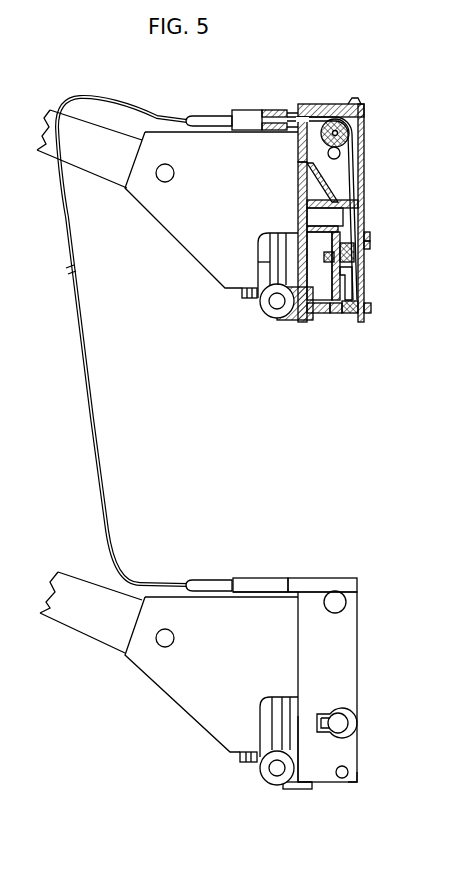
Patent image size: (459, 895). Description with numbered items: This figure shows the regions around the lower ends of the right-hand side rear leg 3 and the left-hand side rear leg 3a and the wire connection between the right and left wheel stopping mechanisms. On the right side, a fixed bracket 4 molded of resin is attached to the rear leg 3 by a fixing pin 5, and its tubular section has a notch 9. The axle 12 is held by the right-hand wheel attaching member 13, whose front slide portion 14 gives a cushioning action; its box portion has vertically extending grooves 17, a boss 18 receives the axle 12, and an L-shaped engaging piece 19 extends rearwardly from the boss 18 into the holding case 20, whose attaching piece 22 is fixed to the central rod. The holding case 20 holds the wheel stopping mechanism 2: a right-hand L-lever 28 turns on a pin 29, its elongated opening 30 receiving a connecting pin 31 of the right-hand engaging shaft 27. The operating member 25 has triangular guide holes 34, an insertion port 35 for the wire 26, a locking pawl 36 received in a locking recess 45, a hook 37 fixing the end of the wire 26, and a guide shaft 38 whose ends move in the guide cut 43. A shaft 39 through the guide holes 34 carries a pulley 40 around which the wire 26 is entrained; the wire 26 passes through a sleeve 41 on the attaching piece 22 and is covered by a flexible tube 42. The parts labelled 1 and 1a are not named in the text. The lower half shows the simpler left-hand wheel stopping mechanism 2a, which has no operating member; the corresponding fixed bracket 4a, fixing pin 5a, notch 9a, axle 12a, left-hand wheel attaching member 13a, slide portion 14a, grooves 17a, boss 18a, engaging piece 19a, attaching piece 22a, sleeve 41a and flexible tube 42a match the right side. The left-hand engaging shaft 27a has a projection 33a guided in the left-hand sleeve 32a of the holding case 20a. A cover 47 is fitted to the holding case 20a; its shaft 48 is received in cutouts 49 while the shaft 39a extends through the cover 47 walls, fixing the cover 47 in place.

The operating device 1 is at (203, 241).
The wheel stopping mechanism 2 is at (317, 228).
The right-hand side rear leg 3 is at (54, 112).
The fixed bracket 4 is at (176, 243).
The fixing pin 5 is at (160, 181).
The notch 9 is at (260, 247).
The axle 12 is at (276, 304).
The right-hand wheel attaching member 13 is at (292, 322).
The slide portion 14 is at (256, 265).
The vertically extending grooves 17 is at (244, 298).
The boss 18 is at (267, 307).
The L-shaped engaging piece 19 is at (306, 316).
The holding case 20 is at (299, 165).
The attaching piece 22 is at (272, 110).
The operating member 25 is at (357, 99).
The wire 26 is at (91, 420).
The right-hand engaging shaft 27 is at (362, 256).
The right-hand L-lever 28 is at (368, 232).
The pin 29 is at (312, 216).
The elongated opening 30 is at (362, 276).
The connecting pin 31 is at (322, 262).
The guide holes 34 is at (338, 160).
The insertion port 35 is at (318, 104).
The locking pawl 36 is at (294, 113).
The hook 37 is at (372, 244).
The guide shaft 38 is at (368, 312).
The shaft 39 is at (365, 114).
The pulley 40 is at (349, 137).
The sleeve 41 is at (240, 110).
The flexible tube 42 is at (198, 116).
The guide cut 43 is at (365, 296).
The locking recess 45 is at (299, 143).
The cover 47 is at (338, 579).
The shaft 48 is at (350, 772).
The cutouts 49 is at (347, 780).
The operating device 1a is at (201, 707).
The left-hand wheel stopping mechanism 2a is at (355, 680).
The left-hand side rear leg 3a is at (88, 622).
The fixed bracket 4a is at (176, 712).
The fixing pin 5a is at (160, 642).
The notch 9a is at (262, 722).
The axle 12a is at (279, 775).
The left-hand wheel attaching member 13a is at (304, 792).
The slide portion 14a is at (300, 716).
The vertically extending grooves 17a is at (249, 762).
The boss 18a is at (271, 780).
The L-shaped engaging piece 19a is at (312, 784).
The holding case 20a is at (357, 638).
The attaching piece 22a is at (274, 592).
The left-hand engaging shaft 27a is at (345, 723).
The left-hand sleeve 32a is at (354, 706).
The projection 33a is at (319, 761).
The shaft 39a is at (347, 602).
The sleeve 41a is at (246, 579).
The flexible tube 42a is at (198, 581).